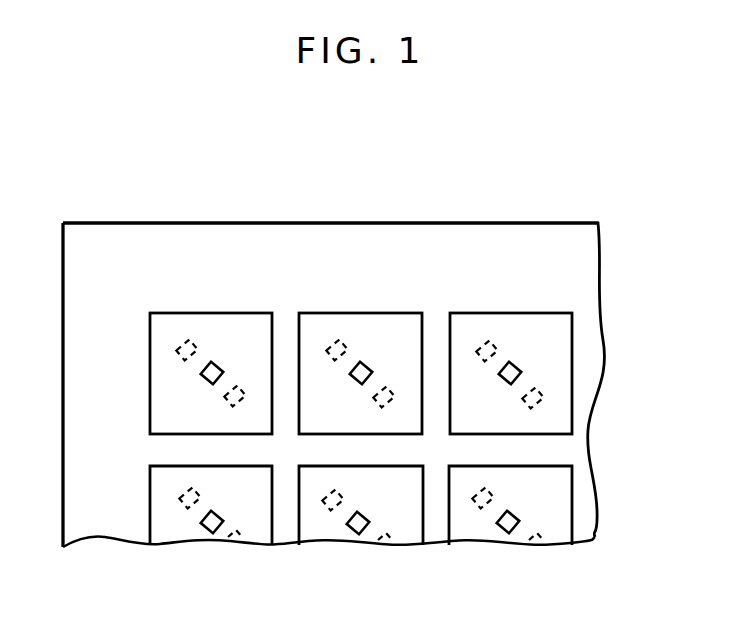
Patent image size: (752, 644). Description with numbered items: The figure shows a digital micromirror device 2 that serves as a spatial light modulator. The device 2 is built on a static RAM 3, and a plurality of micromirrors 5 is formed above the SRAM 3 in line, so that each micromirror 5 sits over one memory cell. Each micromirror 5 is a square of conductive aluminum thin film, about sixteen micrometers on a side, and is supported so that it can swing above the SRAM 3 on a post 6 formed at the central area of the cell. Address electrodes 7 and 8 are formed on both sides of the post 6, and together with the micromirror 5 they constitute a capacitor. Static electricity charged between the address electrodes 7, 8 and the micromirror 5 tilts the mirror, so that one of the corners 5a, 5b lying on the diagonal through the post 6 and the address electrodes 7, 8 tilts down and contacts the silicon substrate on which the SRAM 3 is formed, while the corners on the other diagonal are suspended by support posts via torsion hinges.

The digital micromirror device 2 is at (500, 188).
The static RAM (SRAM) 3 is at (138, 223).
The micromirror 5 is at (251, 328).
The corner of micromirror 5a is at (150, 316).
The corner of micromirror 5b is at (279, 433).
The post 6 is at (212, 362).
The address electrode 7 is at (182, 338).
The address electrode 8 is at (226, 403).